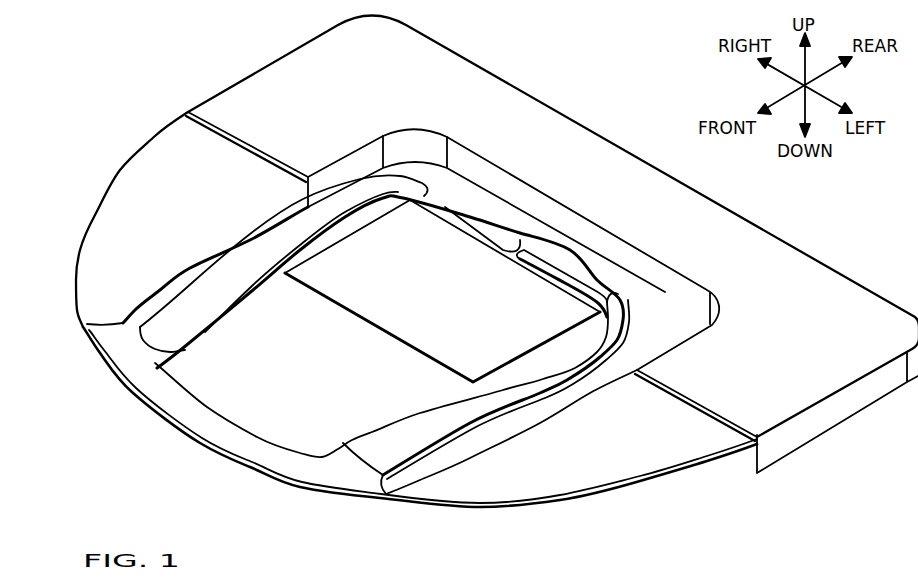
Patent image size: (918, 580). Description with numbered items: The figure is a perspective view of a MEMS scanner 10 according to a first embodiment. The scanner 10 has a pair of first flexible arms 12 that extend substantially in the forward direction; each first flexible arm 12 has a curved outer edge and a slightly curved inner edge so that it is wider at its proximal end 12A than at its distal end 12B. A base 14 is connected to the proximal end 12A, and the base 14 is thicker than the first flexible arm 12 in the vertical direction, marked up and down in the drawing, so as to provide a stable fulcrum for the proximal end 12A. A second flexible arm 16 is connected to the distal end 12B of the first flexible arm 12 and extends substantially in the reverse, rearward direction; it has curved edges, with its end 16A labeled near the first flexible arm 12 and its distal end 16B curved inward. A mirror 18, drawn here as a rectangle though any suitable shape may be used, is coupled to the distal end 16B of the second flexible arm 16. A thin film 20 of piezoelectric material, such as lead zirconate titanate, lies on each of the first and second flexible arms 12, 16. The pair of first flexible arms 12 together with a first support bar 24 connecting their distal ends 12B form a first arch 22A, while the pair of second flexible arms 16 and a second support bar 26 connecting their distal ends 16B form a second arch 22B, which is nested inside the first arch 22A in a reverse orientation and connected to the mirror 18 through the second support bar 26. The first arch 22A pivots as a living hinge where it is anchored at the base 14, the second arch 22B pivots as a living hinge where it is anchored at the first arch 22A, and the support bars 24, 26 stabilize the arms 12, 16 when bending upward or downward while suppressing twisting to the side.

The MEMS scanner 10 is at (88, 68).
The first flexible arm 12 is at (96, 183).
The proximal end 12A is at (186, 112).
The distal end 12B is at (78, 297).
The base 14 is at (838, 425).
The second flexible arm 16 is at (252, 337).
The first channel end 16A is at (183, 350).
The distal end 16B is at (400, 200).
The mirror 18 is at (439, 309).
The thin film 20 is at (172, 217).
The first arch 22A is at (166, 455).
The second arch 22B is at (540, 205).
The first support bar 24 is at (248, 468).
The second support bar 26 is at (555, 232).